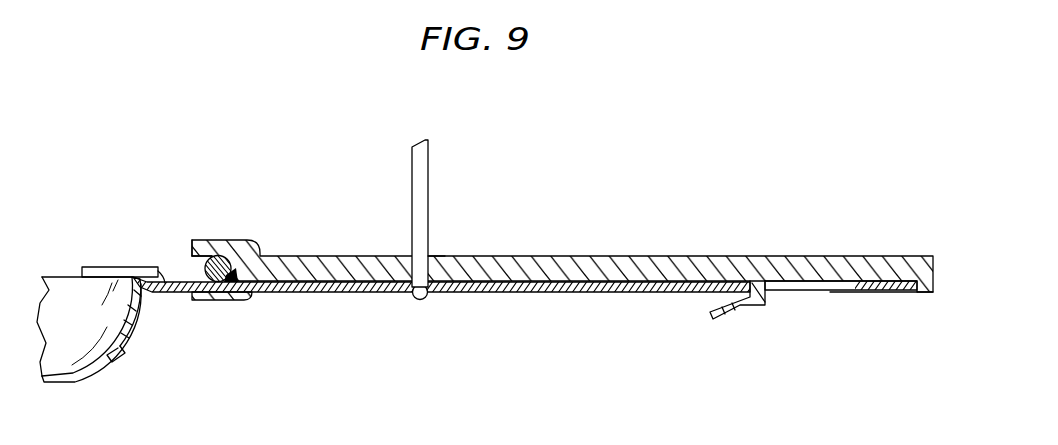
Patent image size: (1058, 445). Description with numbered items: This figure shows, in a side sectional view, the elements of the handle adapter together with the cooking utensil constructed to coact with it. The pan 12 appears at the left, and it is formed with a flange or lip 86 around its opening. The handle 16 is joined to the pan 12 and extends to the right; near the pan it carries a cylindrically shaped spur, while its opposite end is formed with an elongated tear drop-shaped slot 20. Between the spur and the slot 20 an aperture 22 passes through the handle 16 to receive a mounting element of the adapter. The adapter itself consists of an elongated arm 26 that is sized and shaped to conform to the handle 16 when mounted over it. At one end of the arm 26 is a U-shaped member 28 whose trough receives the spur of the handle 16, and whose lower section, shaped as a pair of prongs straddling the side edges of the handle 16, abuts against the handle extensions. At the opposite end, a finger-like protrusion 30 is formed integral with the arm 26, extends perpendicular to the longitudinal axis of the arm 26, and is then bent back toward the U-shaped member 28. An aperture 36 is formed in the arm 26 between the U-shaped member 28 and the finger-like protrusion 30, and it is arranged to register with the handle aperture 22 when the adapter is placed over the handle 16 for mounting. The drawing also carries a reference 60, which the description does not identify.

The pan 12 is at (92, 321).
The handle 16 is at (204, 270).
The slot 20 is at (795, 285).
The aperture 22 is at (420, 299).
The arm 26 is at (699, 256).
The U-shaped member 28 is at (212, 242).
The finger-like protrusion 30 is at (716, 318).
The aperture 36 is at (430, 257).
The pin 60 is at (423, 196).
The lip 86 is at (118, 268).